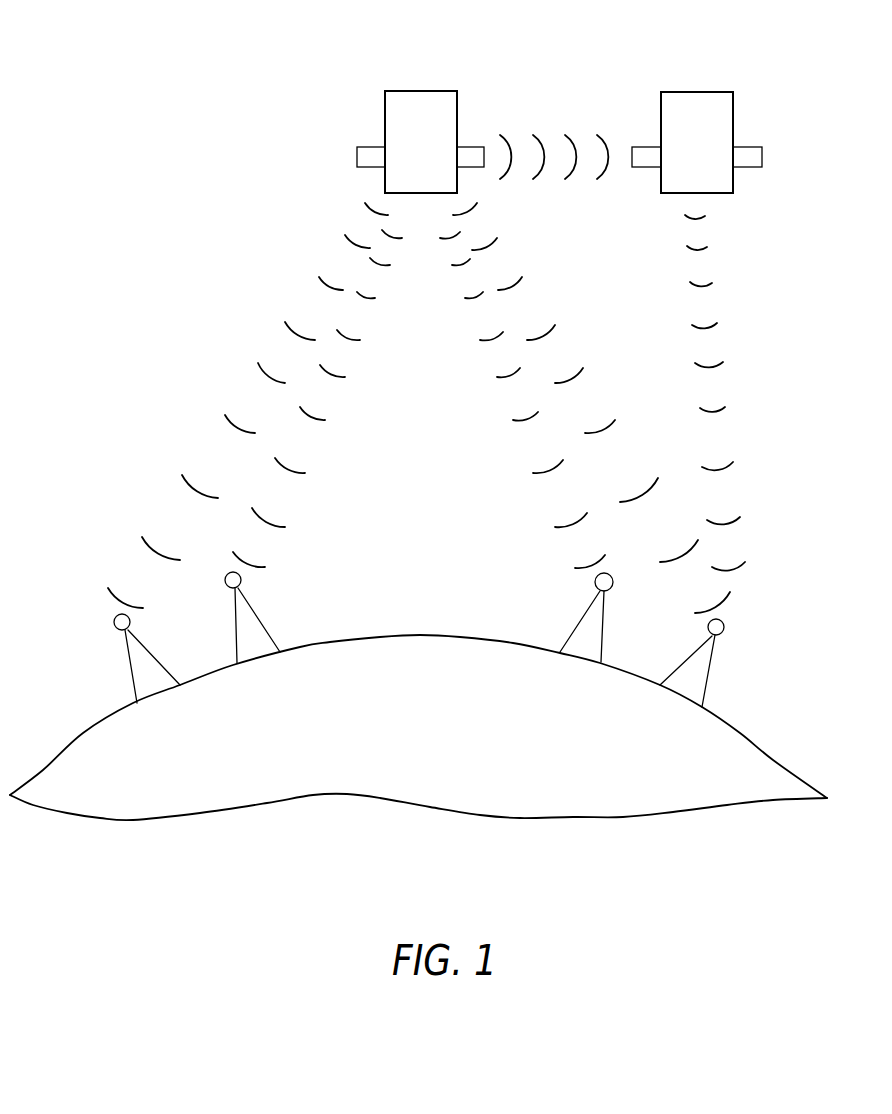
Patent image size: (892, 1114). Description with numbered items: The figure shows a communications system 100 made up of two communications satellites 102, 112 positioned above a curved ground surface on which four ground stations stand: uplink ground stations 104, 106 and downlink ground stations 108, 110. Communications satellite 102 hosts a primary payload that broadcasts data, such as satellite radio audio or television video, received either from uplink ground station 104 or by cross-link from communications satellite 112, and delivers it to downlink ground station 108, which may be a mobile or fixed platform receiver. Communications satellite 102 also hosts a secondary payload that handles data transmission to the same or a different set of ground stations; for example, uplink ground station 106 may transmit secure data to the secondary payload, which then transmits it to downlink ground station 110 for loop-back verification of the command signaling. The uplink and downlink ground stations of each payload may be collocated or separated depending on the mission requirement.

The communications system 100 is at (312, 46).
The communications satellite 102 is at (457, 112).
The communications satellite 112 is at (733, 112).
The uplink ground station 104 is at (575, 627).
The uplink ground station 106 is at (709, 668).
The downlink ground station 108 is at (130, 673).
The downlink ground station 110 is at (259, 618).